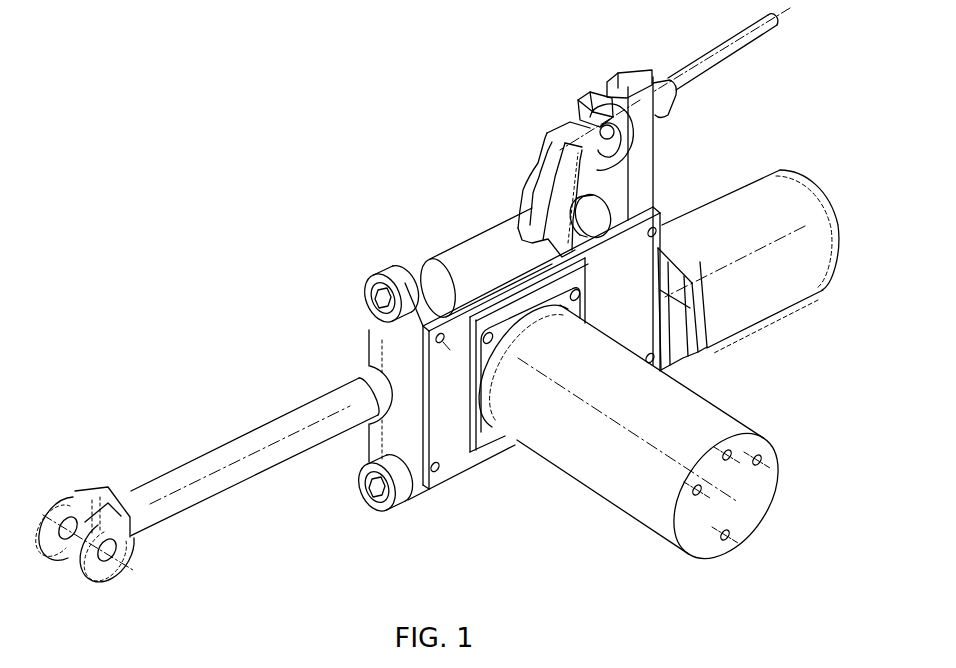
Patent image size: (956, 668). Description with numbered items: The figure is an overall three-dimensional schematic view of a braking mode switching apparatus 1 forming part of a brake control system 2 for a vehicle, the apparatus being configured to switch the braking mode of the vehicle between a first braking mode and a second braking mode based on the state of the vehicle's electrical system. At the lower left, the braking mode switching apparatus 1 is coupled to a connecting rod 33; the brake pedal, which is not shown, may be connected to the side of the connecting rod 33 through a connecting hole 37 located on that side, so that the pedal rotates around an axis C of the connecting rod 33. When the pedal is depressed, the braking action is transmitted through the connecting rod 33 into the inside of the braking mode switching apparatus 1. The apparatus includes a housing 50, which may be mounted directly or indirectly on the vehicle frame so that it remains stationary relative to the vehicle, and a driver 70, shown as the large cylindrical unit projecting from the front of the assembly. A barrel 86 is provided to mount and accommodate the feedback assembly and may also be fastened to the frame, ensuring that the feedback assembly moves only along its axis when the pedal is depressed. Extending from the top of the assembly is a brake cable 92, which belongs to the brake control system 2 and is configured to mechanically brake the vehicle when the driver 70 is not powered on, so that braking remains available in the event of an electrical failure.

The braking mode switching apparatus 1 is at (498, 474).
The brake control system 2 is at (287, 148).
The connecting rod 33 is at (227, 463).
The connecting hole 37 is at (68, 520).
The axis C is at (80, 538).
The housing 50 is at (502, 258).
The driver 70 is at (710, 418).
The barrel 86 is at (703, 218).
The brake cable 92 is at (733, 50).